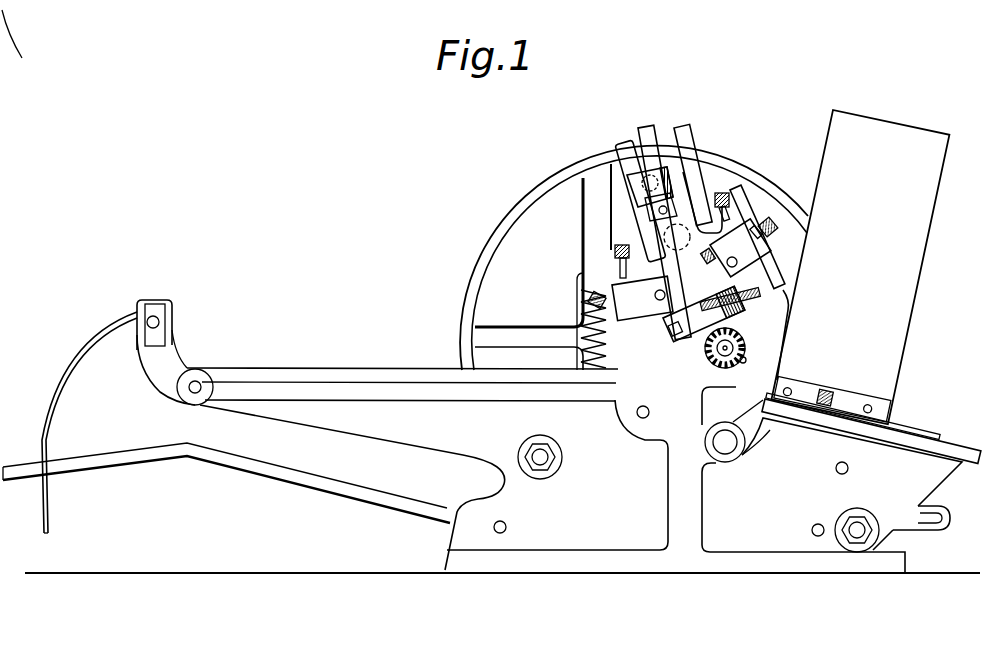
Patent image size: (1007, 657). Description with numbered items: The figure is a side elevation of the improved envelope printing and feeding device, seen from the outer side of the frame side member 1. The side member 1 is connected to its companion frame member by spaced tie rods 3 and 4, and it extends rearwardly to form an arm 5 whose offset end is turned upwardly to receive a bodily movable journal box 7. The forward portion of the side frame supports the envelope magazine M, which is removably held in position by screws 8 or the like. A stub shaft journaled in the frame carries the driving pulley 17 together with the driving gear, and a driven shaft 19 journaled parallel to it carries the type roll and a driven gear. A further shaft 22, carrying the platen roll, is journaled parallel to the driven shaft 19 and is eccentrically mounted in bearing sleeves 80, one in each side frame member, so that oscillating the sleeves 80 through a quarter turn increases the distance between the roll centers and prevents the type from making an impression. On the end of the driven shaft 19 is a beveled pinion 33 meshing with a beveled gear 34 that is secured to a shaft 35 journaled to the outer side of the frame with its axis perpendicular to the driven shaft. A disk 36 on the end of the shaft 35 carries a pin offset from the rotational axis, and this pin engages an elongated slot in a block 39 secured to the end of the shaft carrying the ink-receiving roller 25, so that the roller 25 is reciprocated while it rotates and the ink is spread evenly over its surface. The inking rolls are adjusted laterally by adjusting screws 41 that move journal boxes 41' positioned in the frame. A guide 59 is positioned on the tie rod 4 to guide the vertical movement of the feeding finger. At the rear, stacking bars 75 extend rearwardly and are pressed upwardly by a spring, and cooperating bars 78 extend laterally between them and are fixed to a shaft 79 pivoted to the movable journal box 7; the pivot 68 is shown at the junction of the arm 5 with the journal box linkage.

The side member 1 is at (584, 556).
The tie rod 3 is at (542, 462).
The tie rod 4 is at (857, 530).
The arm 5 is at (280, 368).
The journal box 7 is at (147, 305).
The screw 8 is at (827, 408).
The driving pulley 17 is at (512, 228).
The driven shaft 19 is at (743, 364).
The shaft 22 is at (725, 442).
The ink-receiving roller 25 is at (675, 165).
The beveled pinion 33 is at (744, 345).
The beveled gear 34 is at (735, 316).
The shaft 35 is at (666, 237).
The disk 36 is at (648, 195).
The block 39 is at (638, 148).
The adjusting screw 41 is at (667, 216).
The journal box 41' is at (725, 295).
The guide 59 is at (940, 502).
The pivot 68 is at (195, 393).
The stacking bar 75 is at (240, 458).
The bar 78 is at (68, 384).
The shaft 79 is at (160, 322).
The bearing sleeve 80 is at (733, 458).
The envelope magazine M is at (888, 377).